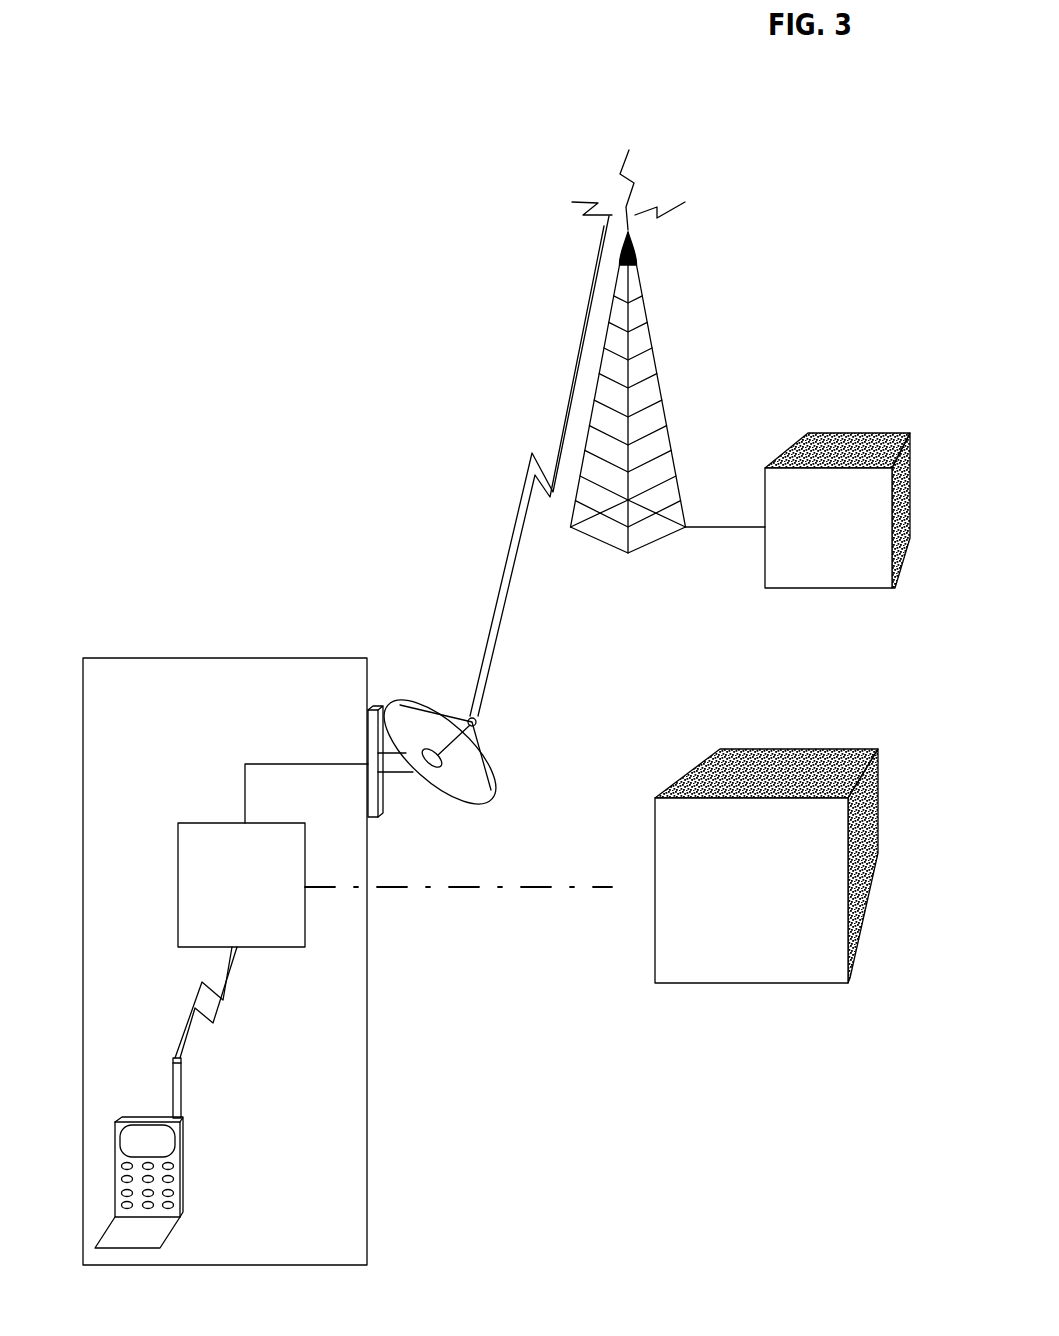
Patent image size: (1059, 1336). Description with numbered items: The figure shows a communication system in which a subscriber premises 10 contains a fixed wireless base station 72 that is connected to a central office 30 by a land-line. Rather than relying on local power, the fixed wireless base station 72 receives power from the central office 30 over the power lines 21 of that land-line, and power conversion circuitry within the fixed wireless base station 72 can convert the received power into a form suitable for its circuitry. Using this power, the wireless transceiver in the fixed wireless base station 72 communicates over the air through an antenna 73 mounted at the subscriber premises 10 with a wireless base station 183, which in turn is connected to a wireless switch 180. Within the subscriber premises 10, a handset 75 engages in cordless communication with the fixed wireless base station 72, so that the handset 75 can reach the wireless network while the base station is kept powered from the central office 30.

The subscriber premises 10 is at (92, 899).
The power lines 21 is at (610, 888).
The central office 30 is at (693, 780).
The fixed wireless base station 72 is at (200, 823).
The antenna 73 is at (492, 797).
The handset 75 is at (183, 1185).
The wireless switch 180 is at (763, 588).
The wireless base station 183 is at (645, 312).